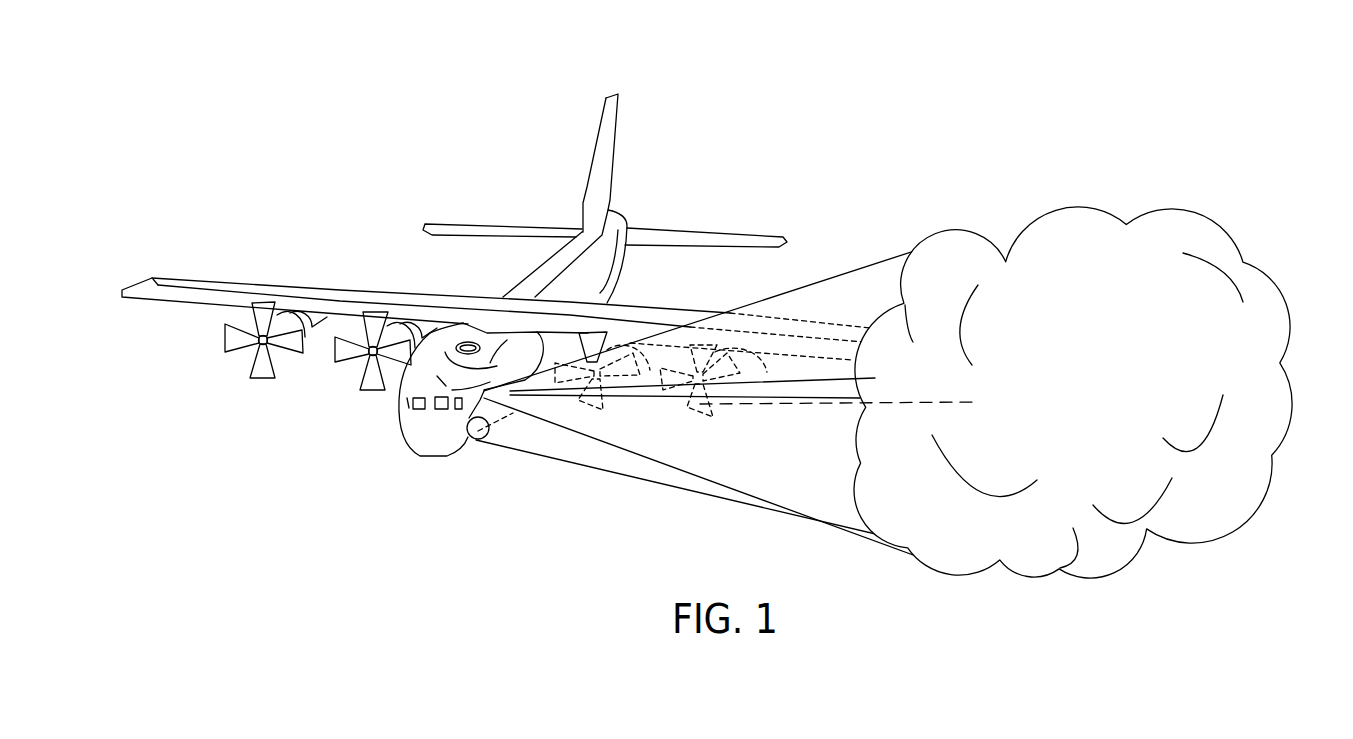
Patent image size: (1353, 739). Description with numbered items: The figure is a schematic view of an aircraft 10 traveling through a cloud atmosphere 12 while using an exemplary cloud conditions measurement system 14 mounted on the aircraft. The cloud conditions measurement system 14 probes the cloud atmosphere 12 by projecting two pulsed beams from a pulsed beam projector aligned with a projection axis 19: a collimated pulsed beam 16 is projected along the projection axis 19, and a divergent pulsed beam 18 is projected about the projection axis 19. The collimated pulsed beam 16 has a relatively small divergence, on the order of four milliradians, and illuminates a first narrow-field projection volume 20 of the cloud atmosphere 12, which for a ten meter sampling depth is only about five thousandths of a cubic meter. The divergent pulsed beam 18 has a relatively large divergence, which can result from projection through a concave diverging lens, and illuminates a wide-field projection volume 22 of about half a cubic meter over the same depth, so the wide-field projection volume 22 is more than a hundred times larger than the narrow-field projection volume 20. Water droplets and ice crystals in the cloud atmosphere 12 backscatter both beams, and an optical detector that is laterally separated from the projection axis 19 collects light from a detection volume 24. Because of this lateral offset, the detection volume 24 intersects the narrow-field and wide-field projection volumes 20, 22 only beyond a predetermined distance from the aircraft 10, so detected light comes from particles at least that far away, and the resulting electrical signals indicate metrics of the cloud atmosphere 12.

The aircraft 10 is at (328, 156).
The cloud atmosphere 12 is at (1086, 392).
The cloud conditions measurement system 14 is at (466, 412).
The collimated pulsed beam 16 is at (730, 418).
The divergent pulsed beam 18 is at (861, 258).
The projection axis 19 is at (909, 408).
The narrow-field projection volume 20 is at (778, 398).
The wide-field projection volume 22 is at (797, 461).
The detection volume 24 is at (600, 470).